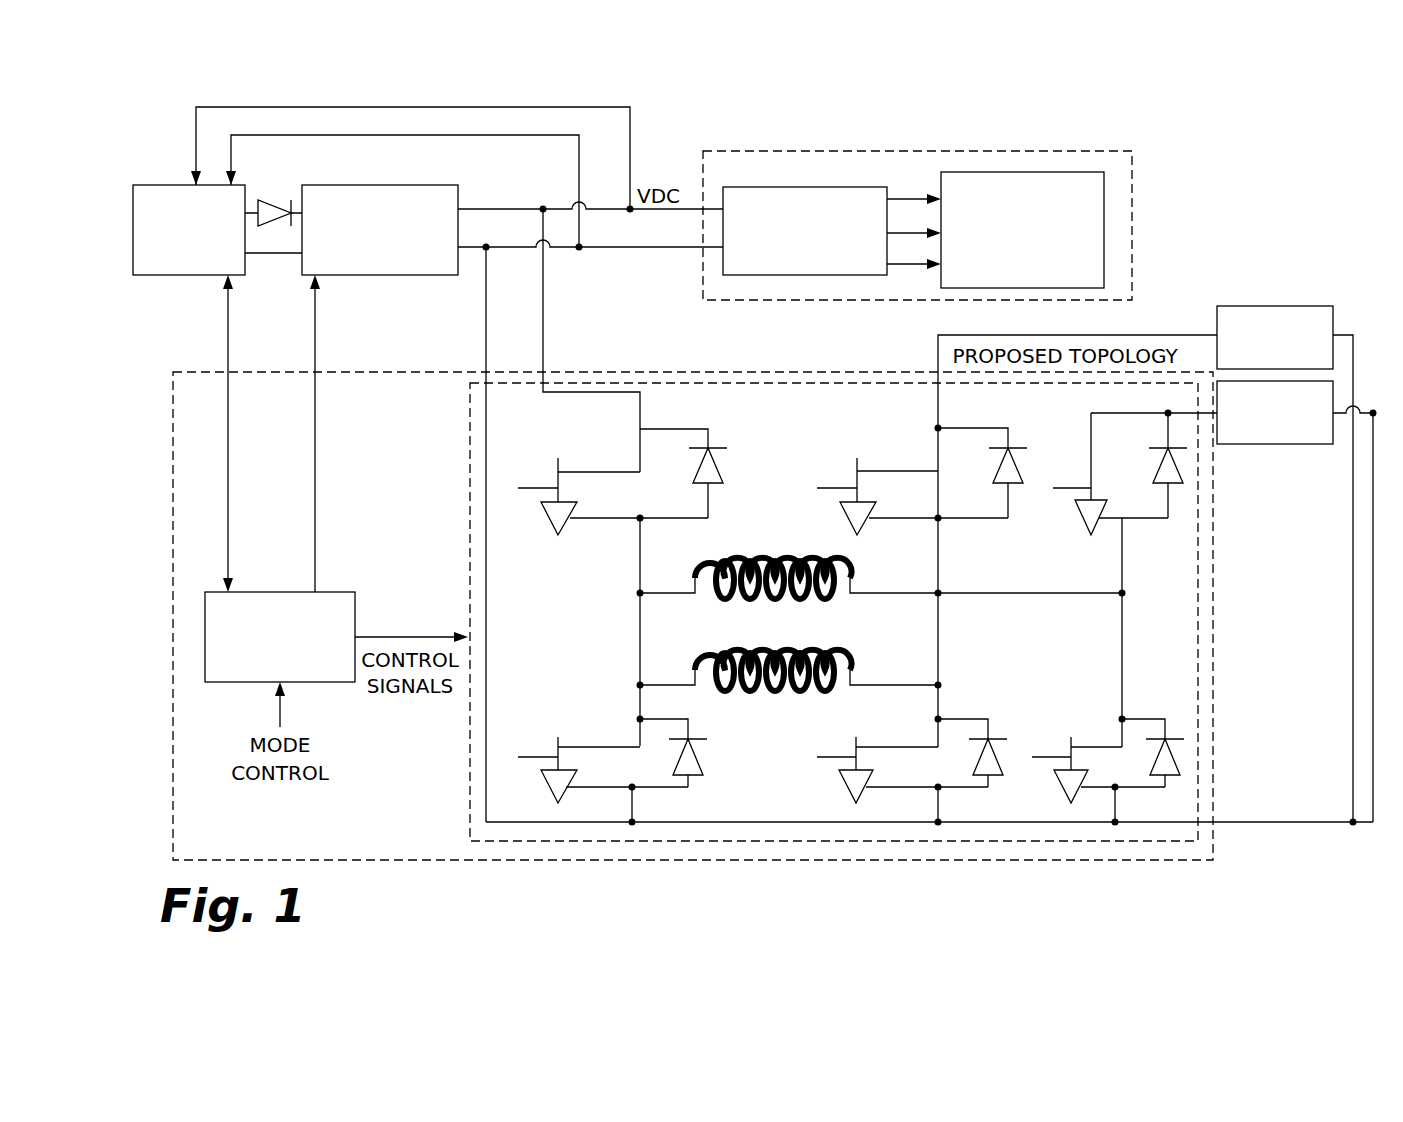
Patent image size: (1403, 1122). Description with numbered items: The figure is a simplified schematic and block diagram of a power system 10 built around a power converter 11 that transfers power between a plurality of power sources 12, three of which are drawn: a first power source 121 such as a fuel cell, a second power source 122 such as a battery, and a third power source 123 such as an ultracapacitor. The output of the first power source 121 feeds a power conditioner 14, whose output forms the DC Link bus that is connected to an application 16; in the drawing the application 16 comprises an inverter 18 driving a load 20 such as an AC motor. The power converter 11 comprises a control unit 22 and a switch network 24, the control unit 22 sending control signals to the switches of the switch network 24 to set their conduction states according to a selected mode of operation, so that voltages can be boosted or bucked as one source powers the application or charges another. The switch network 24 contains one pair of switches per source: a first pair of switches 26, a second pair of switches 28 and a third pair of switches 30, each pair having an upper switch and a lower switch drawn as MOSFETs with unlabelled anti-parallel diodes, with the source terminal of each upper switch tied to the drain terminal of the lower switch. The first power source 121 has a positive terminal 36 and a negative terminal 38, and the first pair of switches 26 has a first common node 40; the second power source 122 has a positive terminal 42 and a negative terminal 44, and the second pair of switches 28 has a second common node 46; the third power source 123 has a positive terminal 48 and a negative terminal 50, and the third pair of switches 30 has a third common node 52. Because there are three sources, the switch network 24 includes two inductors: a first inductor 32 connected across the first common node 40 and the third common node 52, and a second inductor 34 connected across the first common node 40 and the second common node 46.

The power system 10 is at (1236, 120).
The power converter 11 is at (1125, 862).
The power sources 12 is at (189, 203).
The first power source 121 is at (158, 185).
The second power source 122 is at (1297, 306).
The third power source 123 is at (1290, 444).
The power conditioner 14 is at (385, 275).
The application 16 is at (943, 151).
The inverter 18 is at (848, 187).
The load 20 is at (1104, 228).
The control unit 22 is at (345, 592).
The switch network 24 is at (468, 471).
The first pair of switches 26 is at (748, 425).
The second pair of switches 28 is at (1047, 457).
The third pair of switches 30 is at (1171, 545).
The first inductor 32 is at (763, 548).
The second inductor 34 is at (772, 697).
The positive terminal of first power source 36 is at (586, 328).
The negative terminal of first power source 38 is at (487, 522).
The first common node 40 is at (622, 631).
The positive terminal of second power source 42 is at (922, 582).
The negative terminal of second power source 44 is at (929, 837).
The second common node 46 is at (955, 684).
The positive terminal of third power source 48 is at (1166, 400).
The negative terminal of third power source 50 is at (1373, 602).
The third common node 52 is at (1047, 632).